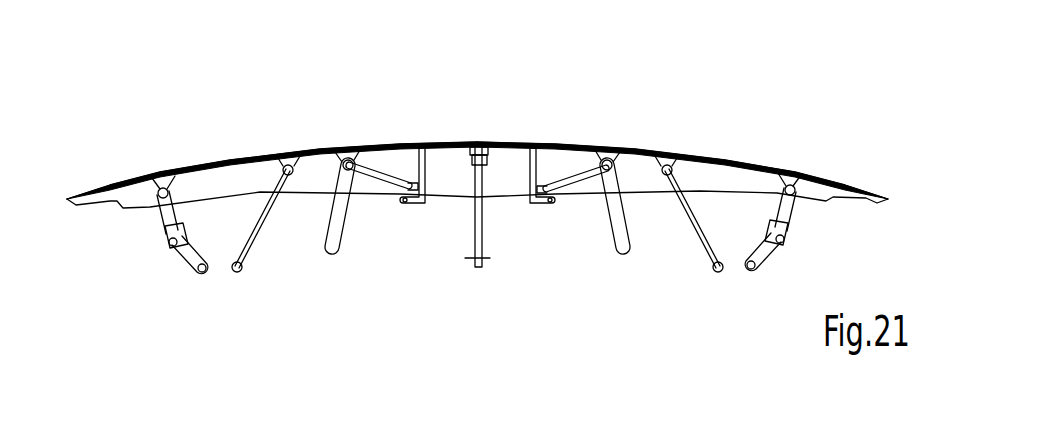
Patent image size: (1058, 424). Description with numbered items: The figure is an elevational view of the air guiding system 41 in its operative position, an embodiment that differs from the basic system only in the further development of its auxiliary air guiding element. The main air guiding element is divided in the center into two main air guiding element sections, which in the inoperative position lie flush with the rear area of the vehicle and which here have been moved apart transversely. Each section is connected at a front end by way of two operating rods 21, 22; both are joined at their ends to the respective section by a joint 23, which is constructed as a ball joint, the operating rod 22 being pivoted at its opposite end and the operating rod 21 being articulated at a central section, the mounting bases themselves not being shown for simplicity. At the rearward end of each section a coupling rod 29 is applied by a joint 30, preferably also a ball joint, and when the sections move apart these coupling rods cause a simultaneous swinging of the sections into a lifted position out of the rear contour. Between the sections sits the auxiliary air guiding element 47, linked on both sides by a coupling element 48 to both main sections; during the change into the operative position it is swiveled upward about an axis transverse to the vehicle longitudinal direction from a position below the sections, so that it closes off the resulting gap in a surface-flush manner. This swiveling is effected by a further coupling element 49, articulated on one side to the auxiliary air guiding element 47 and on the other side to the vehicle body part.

The air guiding system 41 is at (128, 76).
The joint 23 is at (157, 178).
The operating rod 21 is at (183, 253).
The joint 30 is at (289, 165).
The coupling rod 29 is at (254, 257).
The operating rod 22 is at (337, 247).
The coupling element 48 is at (376, 172).
The auxiliary air guiding element 47 is at (506, 143).
The coupling element 49 is at (482, 241).